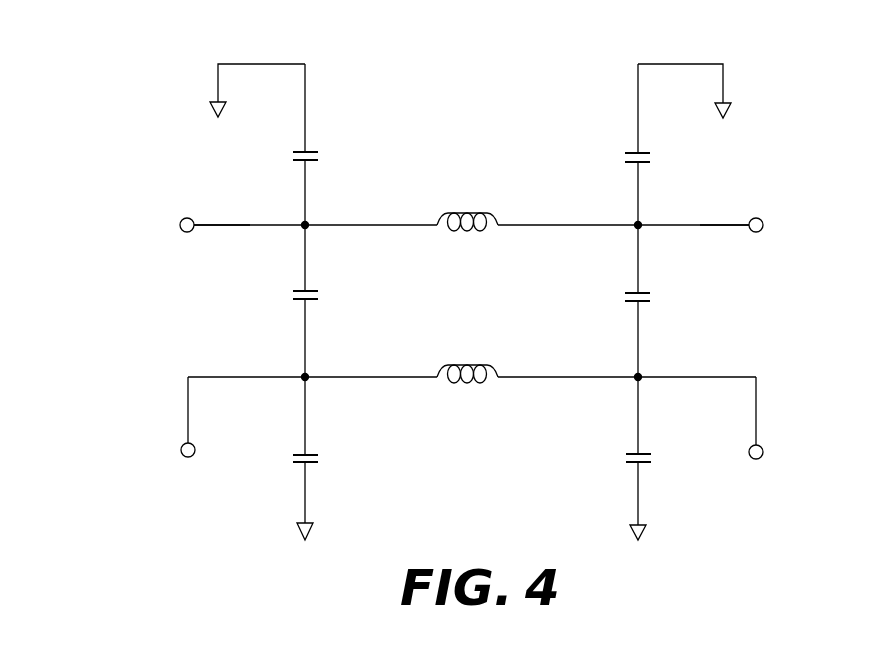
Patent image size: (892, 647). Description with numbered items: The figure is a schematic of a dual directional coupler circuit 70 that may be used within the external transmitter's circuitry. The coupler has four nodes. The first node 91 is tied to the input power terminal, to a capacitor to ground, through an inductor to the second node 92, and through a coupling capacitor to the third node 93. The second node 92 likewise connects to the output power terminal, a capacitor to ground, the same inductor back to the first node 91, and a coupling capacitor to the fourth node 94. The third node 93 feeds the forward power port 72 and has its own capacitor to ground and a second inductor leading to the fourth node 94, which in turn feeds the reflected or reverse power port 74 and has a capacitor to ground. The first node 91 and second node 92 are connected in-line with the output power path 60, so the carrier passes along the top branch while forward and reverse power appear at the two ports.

The dual directional coupler circuit 70 is at (128, 80).
The output power path 60 is at (237, 227).
The first node 91 is at (304, 223).
The second node 92 is at (636, 223).
The third node 93 is at (304, 375).
The fourth node 94 is at (636, 375).
The forward power port 72 is at (181, 450).
The reverse power port 74 is at (763, 452).